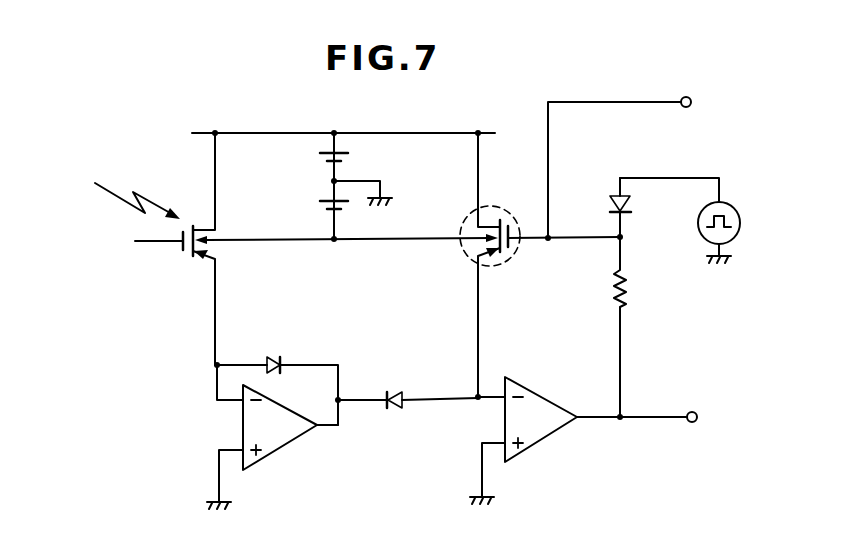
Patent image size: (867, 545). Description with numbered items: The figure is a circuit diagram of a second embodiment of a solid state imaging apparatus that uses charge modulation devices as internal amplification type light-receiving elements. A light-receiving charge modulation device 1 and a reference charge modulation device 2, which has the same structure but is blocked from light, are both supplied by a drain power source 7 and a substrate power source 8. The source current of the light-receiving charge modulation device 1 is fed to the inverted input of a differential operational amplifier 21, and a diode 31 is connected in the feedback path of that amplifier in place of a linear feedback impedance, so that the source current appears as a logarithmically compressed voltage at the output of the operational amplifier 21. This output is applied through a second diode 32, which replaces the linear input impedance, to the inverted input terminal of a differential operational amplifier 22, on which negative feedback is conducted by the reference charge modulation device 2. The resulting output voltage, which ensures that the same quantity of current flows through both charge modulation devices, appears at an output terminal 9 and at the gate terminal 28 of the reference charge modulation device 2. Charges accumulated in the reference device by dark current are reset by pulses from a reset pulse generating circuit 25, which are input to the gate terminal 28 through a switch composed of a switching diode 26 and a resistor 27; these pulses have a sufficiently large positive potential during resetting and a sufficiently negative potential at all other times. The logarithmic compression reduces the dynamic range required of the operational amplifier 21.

The light-receiving charge modulation device 1 is at (188, 258).
The reference charge modulation device 2 is at (505, 266).
The drain power source 7 is at (349, 160).
The substrate power source 8 is at (325, 206).
The output terminal 9 is at (698, 416).
The differential operational amplifier 21 is at (290, 444).
The differential operational amplifier 22 is at (549, 437).
The reset pulse generating circuit 25 is at (741, 224).
The switching diode 26 is at (632, 203).
The resistor 27 is at (628, 296).
The gate terminal 28 is at (540, 242).
The diode 31 is at (282, 361).
The diode 32 is at (397, 396).